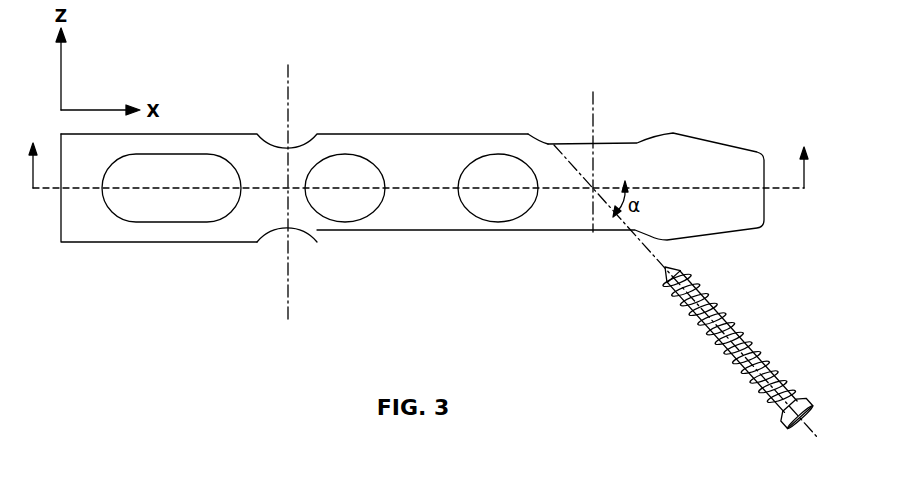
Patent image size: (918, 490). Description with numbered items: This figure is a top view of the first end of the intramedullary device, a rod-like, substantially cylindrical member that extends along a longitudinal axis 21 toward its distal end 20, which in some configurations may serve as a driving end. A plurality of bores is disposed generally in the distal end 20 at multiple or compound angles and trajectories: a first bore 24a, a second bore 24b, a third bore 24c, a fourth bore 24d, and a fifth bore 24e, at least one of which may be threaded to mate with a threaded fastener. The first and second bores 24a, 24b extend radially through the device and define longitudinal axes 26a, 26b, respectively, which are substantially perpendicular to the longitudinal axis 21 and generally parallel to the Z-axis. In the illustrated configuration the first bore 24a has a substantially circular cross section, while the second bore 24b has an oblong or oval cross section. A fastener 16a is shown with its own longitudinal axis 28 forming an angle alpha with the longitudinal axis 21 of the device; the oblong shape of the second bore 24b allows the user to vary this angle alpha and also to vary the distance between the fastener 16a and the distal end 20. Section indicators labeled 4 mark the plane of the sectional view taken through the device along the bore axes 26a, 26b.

The section line indicator for FIG. 4 is at (419, 154).
The fastener 16a is at (718, 352).
The distal end 20 is at (766, 200).
The longitudinal axis 21 is at (790, 188).
The first bore 24a is at (276, 233).
The second bore 24b is at (538, 143).
The third bore 24c is at (182, 221).
The fourth bore 24d is at (324, 163).
The fifth bore 24e is at (472, 163).
The longitudinal axis of first bore 26a is at (287, 101).
The longitudinal axis of second bore 26b is at (598, 122).
The longitudinal axis of fastener 28 is at (818, 442).